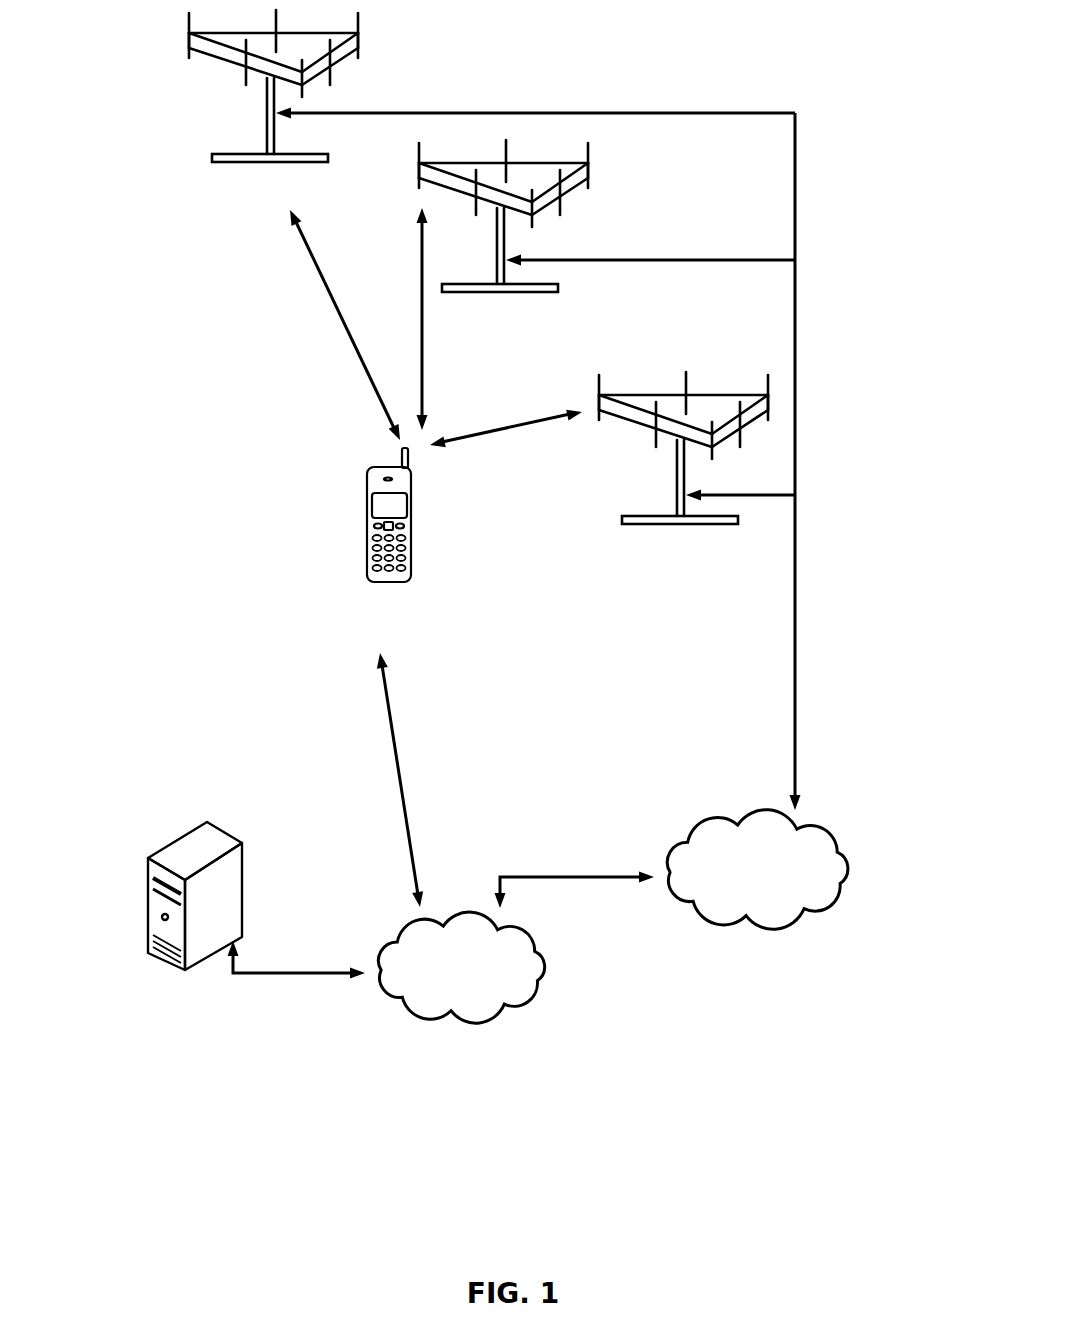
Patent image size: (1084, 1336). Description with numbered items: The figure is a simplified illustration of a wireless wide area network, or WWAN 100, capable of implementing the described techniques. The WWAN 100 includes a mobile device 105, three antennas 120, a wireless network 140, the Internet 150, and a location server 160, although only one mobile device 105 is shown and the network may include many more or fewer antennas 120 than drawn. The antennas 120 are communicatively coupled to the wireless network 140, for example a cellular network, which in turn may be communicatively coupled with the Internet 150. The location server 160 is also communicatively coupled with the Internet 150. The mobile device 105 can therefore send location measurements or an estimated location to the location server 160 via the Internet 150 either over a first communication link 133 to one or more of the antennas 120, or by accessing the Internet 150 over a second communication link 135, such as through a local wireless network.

The wireless wide area network (WWAN) 100 is at (198, 1141).
The mobile device 105 is at (370, 517).
The antennas 120 is at (302, 163).
The first communication link 133 is at (322, 275).
The second communication link 135 is at (398, 762).
The wireless network 140 is at (843, 830).
The Internet 150 is at (557, 975).
The location server 160 is at (222, 833).